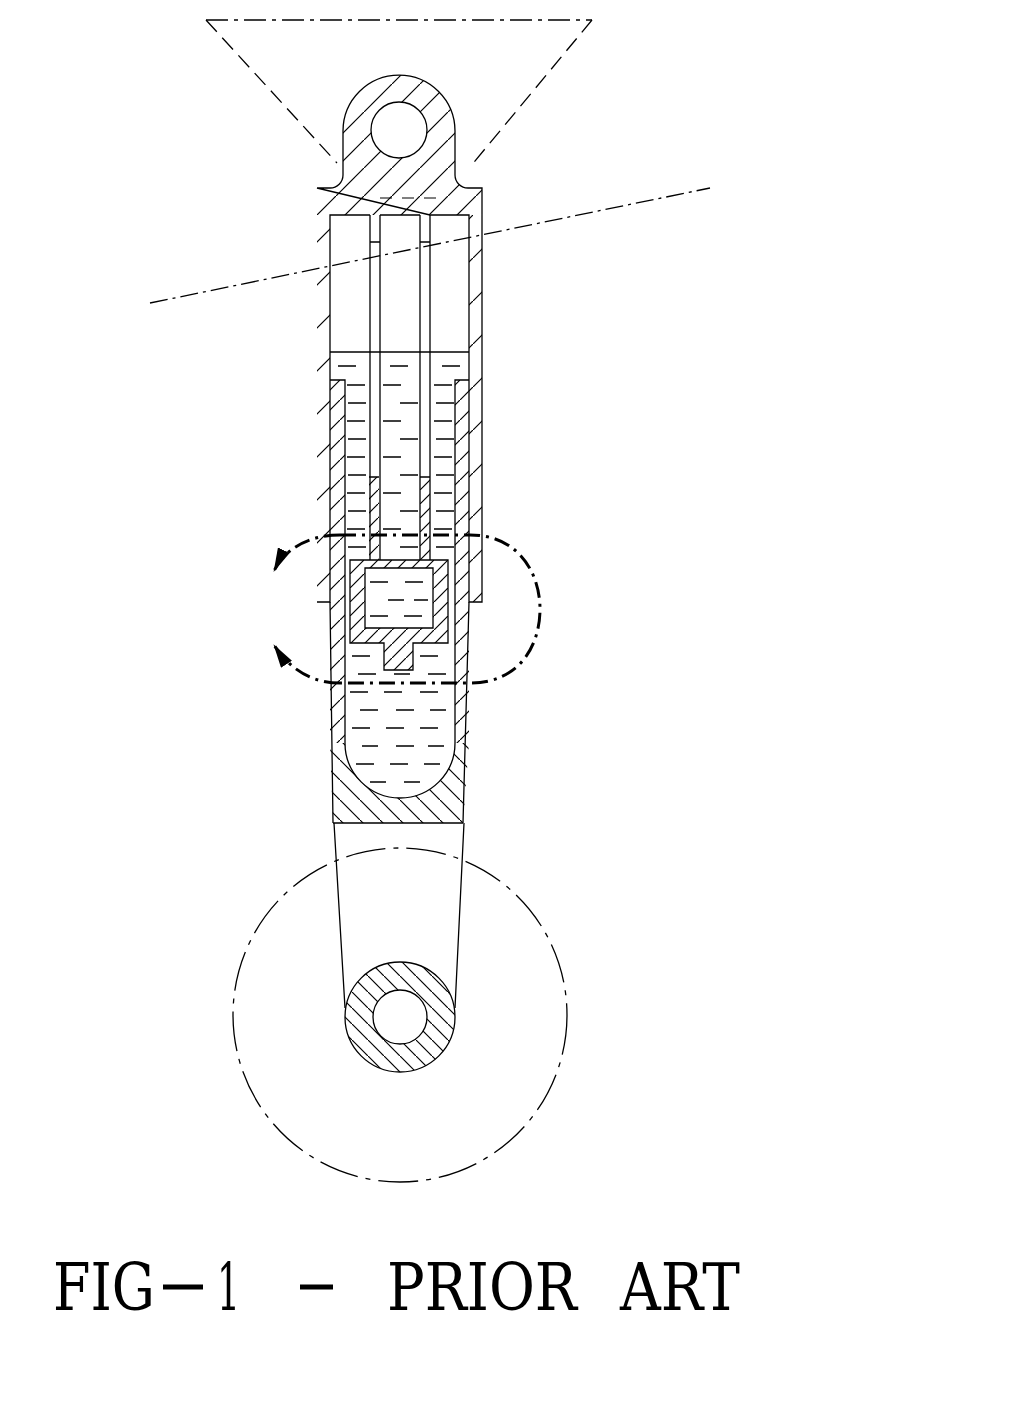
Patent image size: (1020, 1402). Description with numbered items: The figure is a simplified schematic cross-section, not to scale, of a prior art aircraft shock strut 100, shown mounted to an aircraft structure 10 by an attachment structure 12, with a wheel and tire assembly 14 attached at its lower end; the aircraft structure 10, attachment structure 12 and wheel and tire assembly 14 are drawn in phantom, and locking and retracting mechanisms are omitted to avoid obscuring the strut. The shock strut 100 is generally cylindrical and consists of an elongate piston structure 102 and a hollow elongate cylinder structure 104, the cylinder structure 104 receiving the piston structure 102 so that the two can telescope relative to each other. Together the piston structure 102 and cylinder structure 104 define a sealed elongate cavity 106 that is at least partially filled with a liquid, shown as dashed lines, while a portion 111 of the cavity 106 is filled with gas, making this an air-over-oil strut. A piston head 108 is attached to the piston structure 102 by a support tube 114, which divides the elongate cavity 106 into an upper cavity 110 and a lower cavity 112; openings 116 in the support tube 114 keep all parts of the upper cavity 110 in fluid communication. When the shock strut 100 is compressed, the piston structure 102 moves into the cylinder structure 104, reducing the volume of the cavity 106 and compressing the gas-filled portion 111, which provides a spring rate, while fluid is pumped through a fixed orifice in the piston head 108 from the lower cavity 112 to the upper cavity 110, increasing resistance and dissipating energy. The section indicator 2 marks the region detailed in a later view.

The section line 2- 2 is at (392, 609).
The aircraft structure 10 is at (603, 210).
The attachment structure 12 is at (530, 88).
The wheel and tire assembly 14 is at (513, 898).
The shock strut 100 is at (337, 573).
The piston structure 102 is at (317, 358).
The cylinder structure 104 is at (330, 718).
The elongate cavity 106 is at (353, 457).
The piston head 108 is at (448, 627).
The upper cavity 110 is at (447, 435).
The portion filled with gas 111 is at (445, 307).
The lower cavity 112 is at (427, 745).
The support tube 114 is at (425, 522).
The openings 116 is at (425, 340).